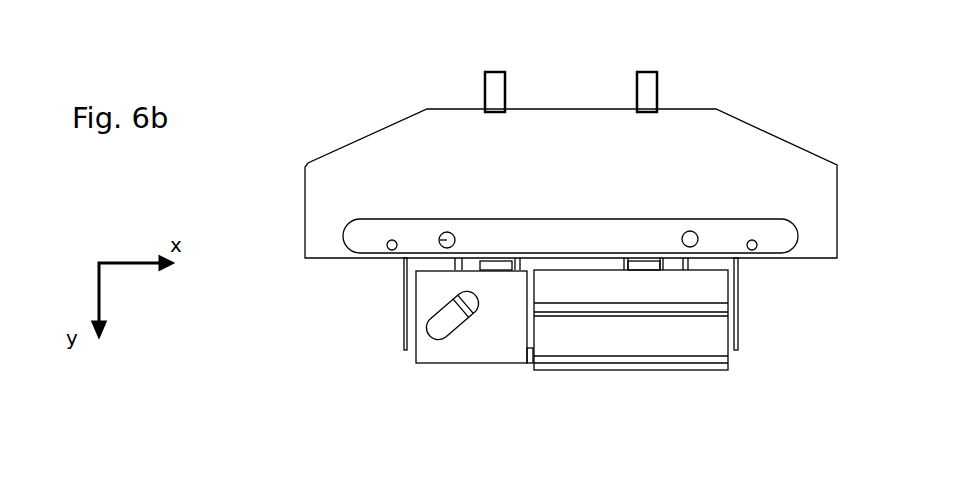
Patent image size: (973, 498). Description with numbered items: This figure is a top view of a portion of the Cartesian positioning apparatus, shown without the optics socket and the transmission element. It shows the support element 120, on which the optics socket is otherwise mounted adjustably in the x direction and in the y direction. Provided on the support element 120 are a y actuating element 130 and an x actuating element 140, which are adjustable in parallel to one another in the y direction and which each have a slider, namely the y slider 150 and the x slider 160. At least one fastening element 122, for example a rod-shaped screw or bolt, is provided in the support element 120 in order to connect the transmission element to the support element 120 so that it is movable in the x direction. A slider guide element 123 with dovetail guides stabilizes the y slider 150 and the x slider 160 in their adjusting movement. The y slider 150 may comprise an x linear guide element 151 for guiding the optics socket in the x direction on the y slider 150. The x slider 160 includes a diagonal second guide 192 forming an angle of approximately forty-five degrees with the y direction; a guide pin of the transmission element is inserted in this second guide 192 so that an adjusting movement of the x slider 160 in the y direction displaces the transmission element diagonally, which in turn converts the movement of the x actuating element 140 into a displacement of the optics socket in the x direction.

The support element 120 is at (813, 178).
The fastening element 122 is at (440, 241).
The slider guide element 123 is at (410, 330).
The y actuating element 130 is at (657, 80).
The x actuating element 140 is at (505, 76).
The y slider 150 is at (640, 365).
The x linear guide element 151 is at (718, 338).
The x slider 160 is at (485, 355).
The second guide 192 is at (443, 332).